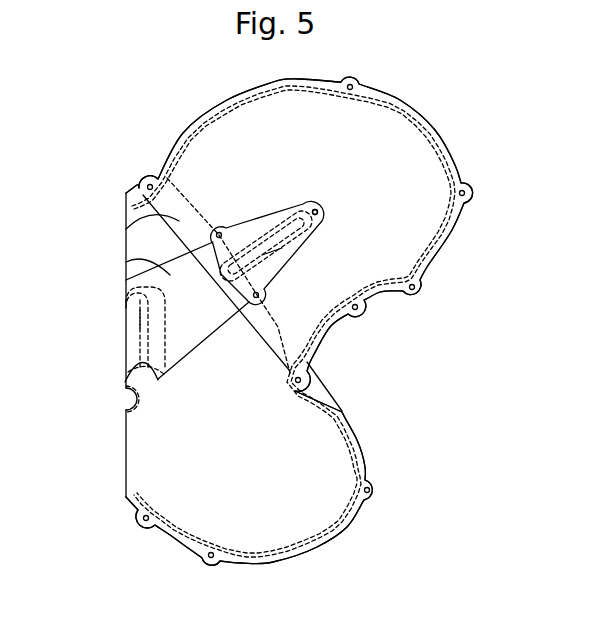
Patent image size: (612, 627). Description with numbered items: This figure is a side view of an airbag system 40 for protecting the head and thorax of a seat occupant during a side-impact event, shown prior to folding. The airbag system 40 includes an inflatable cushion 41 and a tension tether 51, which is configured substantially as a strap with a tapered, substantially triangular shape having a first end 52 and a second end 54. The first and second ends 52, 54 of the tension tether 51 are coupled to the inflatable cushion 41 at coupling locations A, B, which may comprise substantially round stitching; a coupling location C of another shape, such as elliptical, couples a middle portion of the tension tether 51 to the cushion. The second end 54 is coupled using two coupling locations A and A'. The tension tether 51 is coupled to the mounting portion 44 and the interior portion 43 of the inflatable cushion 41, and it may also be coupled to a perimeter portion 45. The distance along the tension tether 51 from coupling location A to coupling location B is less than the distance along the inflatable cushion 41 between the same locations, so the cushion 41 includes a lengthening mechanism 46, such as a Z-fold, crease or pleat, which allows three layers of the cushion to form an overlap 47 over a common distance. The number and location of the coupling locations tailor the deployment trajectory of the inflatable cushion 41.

The airbag system 40 is at (432, 414).
The inflatable cushion 41 is at (407, 155).
The interior portion 43 is at (299, 186).
The mounting portion 44 is at (133, 343).
The perimeter portion 45 is at (229, 101).
The lengthening mechanism 46 is at (127, 230).
The overlap 47 is at (318, 394).
The tension tether 51 is at (150, 260).
The first end 52 is at (282, 223).
The second end 54 is at (147, 310).
The coupling location A is at (167, 313).
The coupling location A' is at (156, 396).
The coupling location B is at (325, 213).
The coupling location C is at (272, 257).